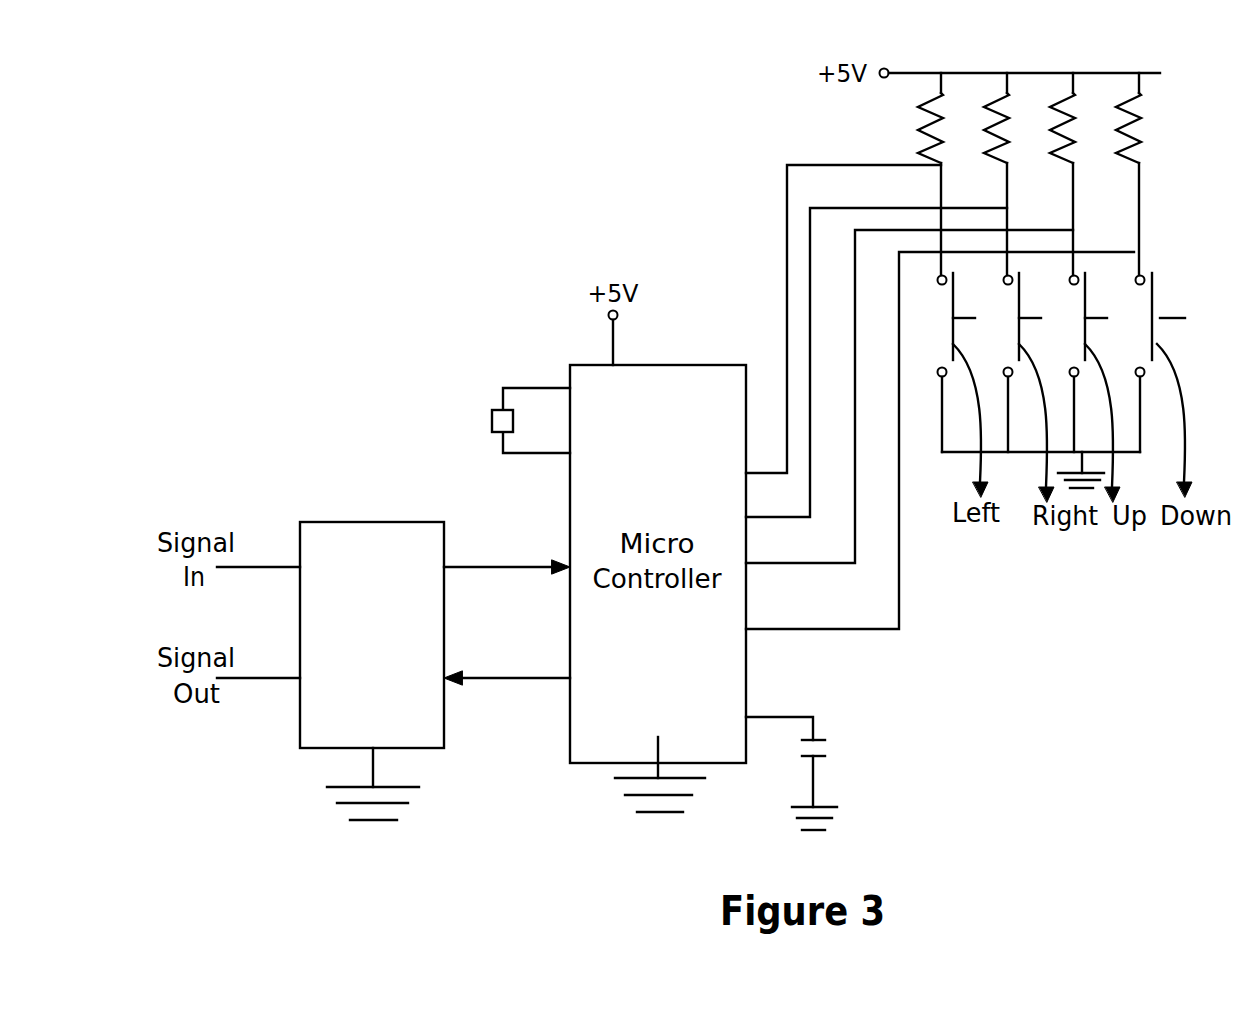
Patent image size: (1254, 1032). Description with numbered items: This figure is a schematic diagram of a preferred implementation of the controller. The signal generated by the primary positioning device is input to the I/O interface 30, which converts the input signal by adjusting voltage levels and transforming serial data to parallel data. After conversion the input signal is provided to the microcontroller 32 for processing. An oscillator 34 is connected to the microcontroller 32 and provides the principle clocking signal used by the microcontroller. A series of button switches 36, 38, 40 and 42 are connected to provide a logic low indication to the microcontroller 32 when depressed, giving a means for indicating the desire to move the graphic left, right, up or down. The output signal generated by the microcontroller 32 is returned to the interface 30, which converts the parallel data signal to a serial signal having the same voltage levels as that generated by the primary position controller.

The I/O interface 30 is at (341, 527).
The microcontroller 32 is at (728, 672).
The oscillator 34 is at (503, 421).
The button switch 36 is at (955, 293).
The button switch 38 is at (1021, 293).
The button switch 40 is at (1087, 293).
The button switch 42 is at (1160, 293).